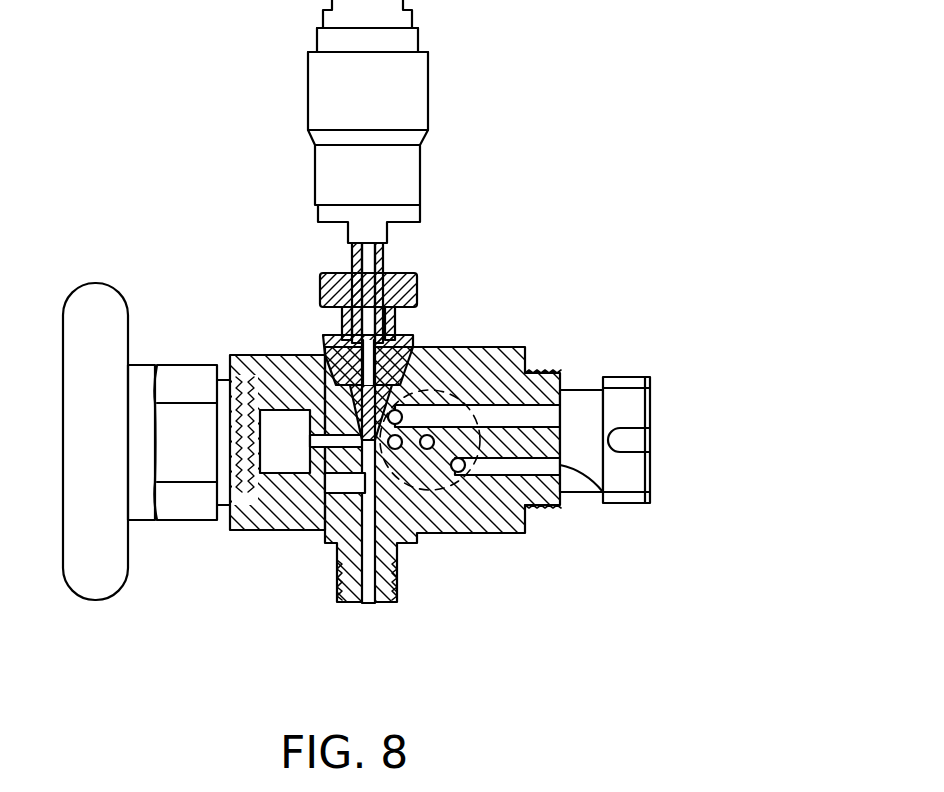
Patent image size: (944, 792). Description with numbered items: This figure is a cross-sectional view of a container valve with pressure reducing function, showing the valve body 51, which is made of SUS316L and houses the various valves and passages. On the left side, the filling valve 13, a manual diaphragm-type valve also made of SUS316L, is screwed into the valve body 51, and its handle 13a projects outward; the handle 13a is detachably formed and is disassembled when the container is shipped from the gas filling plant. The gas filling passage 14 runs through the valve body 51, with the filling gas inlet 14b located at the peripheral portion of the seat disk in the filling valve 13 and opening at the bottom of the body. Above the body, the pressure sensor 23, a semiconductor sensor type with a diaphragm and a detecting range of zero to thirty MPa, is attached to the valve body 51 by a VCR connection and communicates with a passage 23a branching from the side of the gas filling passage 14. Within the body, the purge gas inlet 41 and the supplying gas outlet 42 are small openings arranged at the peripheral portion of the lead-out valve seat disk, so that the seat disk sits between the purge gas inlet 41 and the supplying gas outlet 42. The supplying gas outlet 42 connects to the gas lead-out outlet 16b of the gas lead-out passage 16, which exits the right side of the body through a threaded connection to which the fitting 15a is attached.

The filling valve 13 is at (186, 318).
The handle 13a is at (96, 588).
The gas filling passage 14 is at (412, 512).
The filling gas inlet 14b is at (370, 602).
The side fitting 15a is at (628, 477).
The gas lead-out passage 16 is at (430, 449).
The gas lead-out outlet 16b is at (603, 507).
The pressure sensor 23 is at (455, 151).
The passage 23a is at (332, 352).
The purge gas inlet 41 is at (401, 411).
The supplying gas outlet 42 is at (461, 471).
The valve body 51 is at (560, 335).